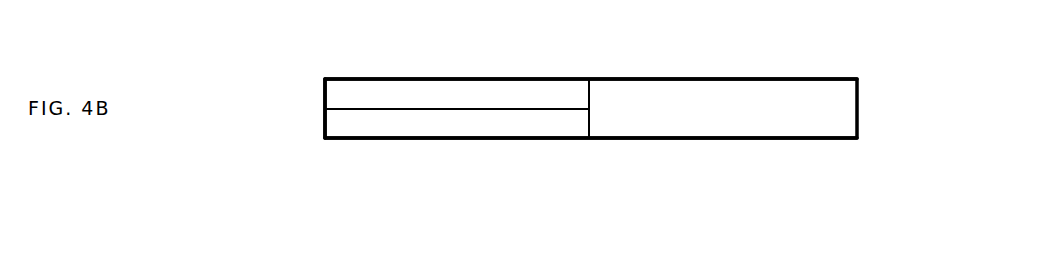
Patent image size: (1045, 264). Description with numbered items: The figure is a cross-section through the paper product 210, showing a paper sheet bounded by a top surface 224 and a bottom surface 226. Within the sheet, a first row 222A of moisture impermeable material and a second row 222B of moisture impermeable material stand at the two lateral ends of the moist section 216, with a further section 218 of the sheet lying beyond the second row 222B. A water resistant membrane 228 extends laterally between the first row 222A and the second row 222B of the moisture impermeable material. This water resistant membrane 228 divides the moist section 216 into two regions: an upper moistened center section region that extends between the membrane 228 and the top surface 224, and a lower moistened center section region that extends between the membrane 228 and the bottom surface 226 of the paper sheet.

The stitch / suture device 210 is at (310, 75).
The moist section 216 is at (451, 148).
The second portion 218 is at (701, 147).
The first row of moisture impermeable material 222A is at (325, 126).
The second row of moisture impermeable material 222B is at (590, 125).
The top surface 224 is at (783, 78).
The bottom surface 226 is at (770, 138).
The water resistant membrane 228 is at (480, 109).